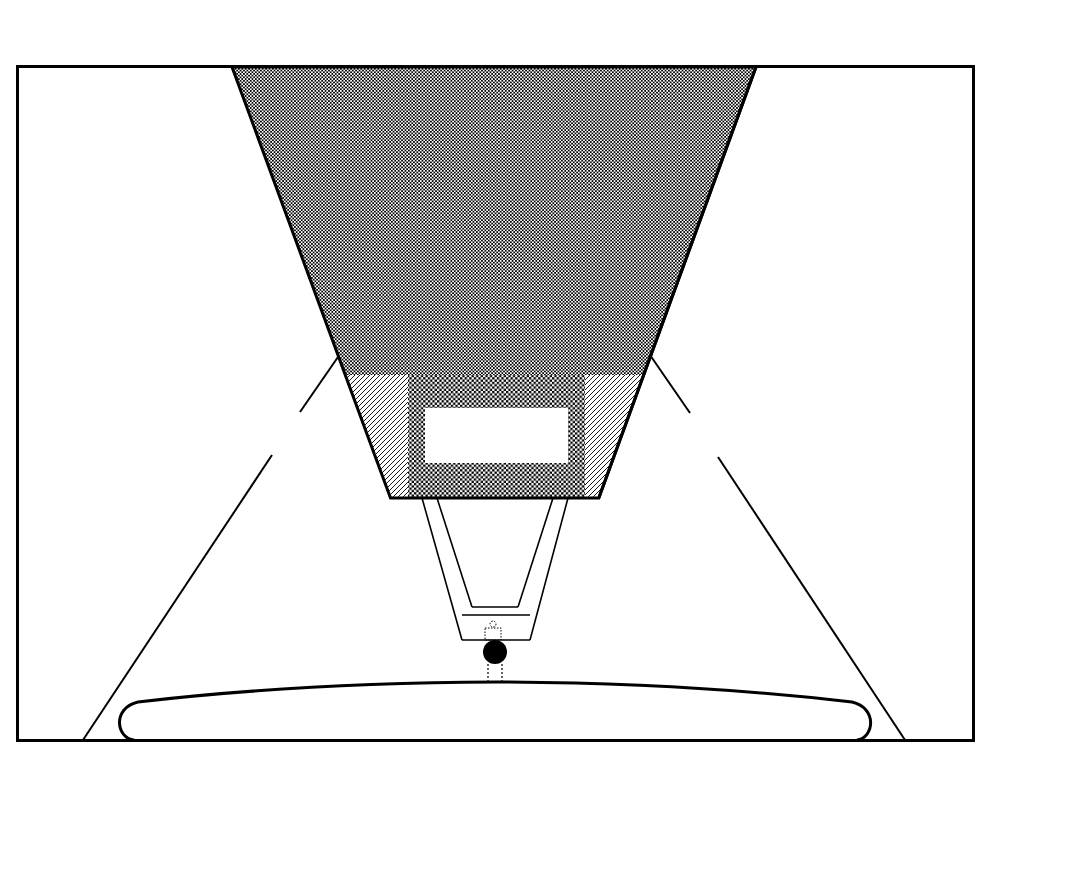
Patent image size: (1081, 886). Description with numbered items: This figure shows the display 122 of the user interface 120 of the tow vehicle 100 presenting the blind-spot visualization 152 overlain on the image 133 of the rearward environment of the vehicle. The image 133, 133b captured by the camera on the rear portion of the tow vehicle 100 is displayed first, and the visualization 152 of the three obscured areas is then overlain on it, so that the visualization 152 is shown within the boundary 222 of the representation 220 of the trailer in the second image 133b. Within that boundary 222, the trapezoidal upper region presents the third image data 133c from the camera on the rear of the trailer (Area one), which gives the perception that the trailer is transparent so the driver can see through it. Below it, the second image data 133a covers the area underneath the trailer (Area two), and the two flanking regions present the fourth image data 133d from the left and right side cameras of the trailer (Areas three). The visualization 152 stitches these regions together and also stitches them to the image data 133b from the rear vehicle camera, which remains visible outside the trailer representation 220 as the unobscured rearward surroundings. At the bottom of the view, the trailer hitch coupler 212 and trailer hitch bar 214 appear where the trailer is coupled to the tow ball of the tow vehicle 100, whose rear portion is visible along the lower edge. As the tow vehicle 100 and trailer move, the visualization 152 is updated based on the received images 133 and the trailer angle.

The display 122 is at (864, 36).
The image 133 is at (945, 157).
The first image data 133a is at (550, 434).
The second image data 133b is at (185, 334).
The third image data 133c is at (567, 196).
The fourth image data 133d is at (393, 425).
The blind-spot visualization 152 is at (514, 282).
The representation of the trailer 220 is at (627, 313).
The boundary of the trailer 222 is at (712, 197).
The trailer hitch bar 214 is at (449, 597).
The trailer hitch coupler 212 is at (483, 652).
The user interface 120 is at (507, 656).
The tow vehicle 100 is at (516, 720).